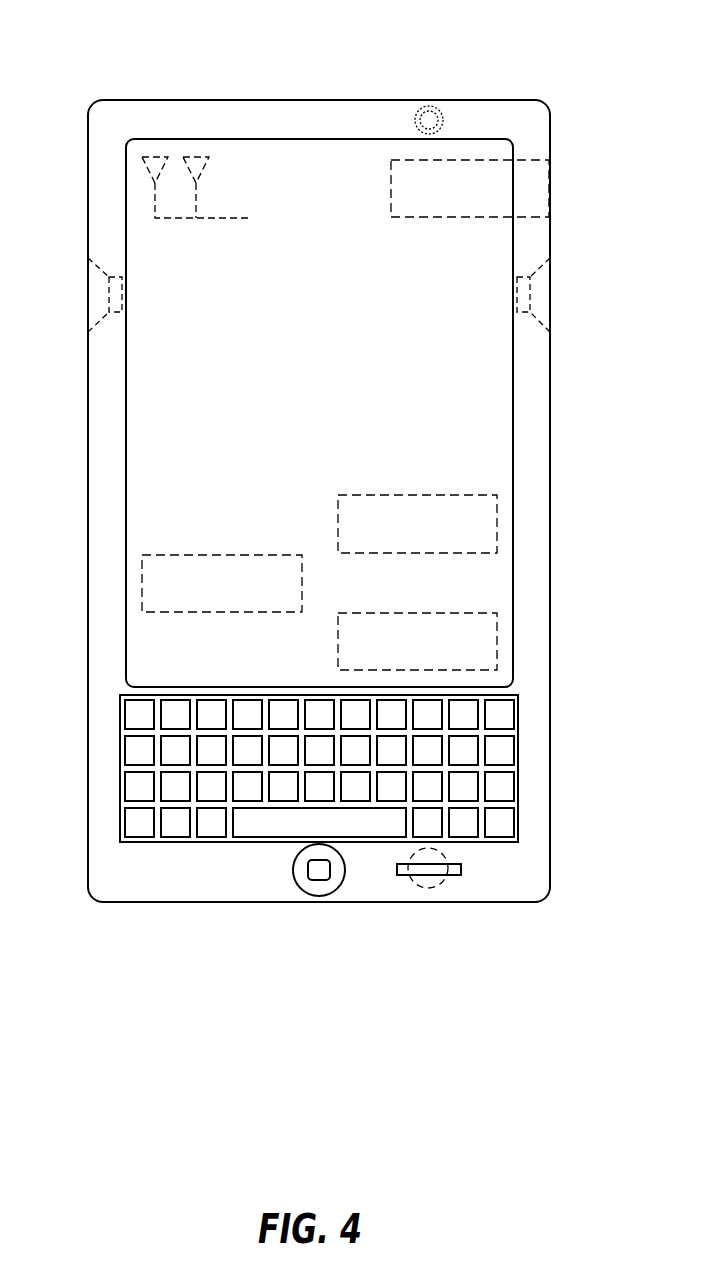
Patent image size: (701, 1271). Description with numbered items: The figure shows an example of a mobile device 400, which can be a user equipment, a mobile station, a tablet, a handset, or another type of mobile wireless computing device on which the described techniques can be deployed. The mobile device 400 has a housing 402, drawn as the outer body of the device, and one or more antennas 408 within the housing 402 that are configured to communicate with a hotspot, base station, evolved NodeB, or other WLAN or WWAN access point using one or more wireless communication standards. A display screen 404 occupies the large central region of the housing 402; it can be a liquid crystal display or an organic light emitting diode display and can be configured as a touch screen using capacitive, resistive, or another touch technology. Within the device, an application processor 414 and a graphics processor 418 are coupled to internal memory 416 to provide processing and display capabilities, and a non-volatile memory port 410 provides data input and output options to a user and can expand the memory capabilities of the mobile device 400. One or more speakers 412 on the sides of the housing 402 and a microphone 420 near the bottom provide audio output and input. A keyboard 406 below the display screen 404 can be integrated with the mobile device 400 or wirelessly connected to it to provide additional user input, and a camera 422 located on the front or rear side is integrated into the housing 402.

The mobile device 400 is at (540, 38).
The housing 402 is at (320, 99).
The display screen 404 is at (493, 403).
The keyboard 406 is at (519, 769).
The antennas 408 is at (197, 157).
The non-volatile memory port 410 is at (551, 185).
The speakers 412 is at (98, 294).
The application processor 414 is at (417, 495).
The internal memory 416 is at (417, 613).
The graphics processor 418 is at (222, 555).
The microphone 420 is at (432, 889).
The camera 422 is at (438, 109).